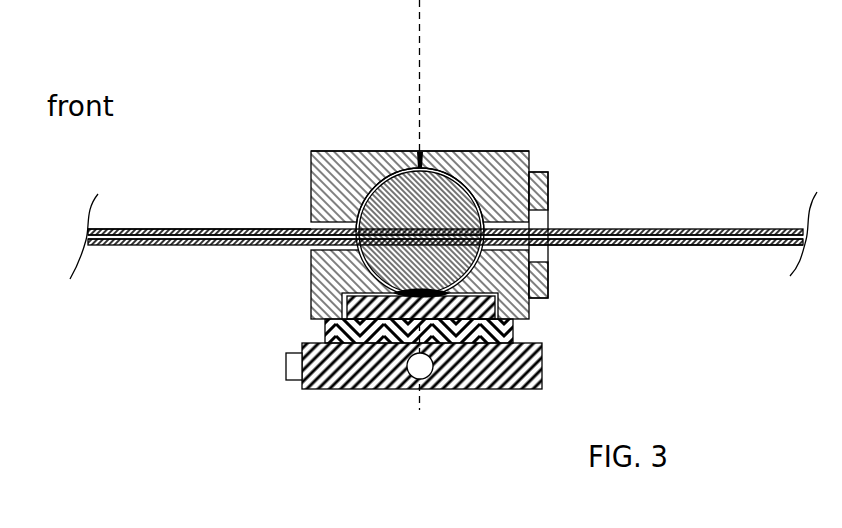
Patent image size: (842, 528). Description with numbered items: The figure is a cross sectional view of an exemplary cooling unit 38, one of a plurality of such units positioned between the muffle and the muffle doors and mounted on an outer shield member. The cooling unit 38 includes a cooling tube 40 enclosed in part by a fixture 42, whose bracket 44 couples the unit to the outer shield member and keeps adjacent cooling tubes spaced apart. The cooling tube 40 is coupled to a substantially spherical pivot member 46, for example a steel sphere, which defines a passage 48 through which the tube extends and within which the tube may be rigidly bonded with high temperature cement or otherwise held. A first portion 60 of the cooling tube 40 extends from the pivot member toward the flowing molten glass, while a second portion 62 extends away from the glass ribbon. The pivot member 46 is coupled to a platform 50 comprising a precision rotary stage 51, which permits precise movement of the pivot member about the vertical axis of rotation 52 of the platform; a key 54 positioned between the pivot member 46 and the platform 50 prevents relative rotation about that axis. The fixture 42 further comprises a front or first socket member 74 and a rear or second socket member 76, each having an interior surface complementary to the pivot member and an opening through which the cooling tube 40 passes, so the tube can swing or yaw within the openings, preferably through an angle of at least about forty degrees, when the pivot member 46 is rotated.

The cooling unit 38 is at (460, 92).
The cooling tube 40 is at (685, 226).
The fixture 42 is at (490, 147).
The bracket 44 is at (544, 172).
The pivot member 46 is at (387, 179).
The passage 48 is at (362, 195).
The platform 50 is at (342, 294).
The precision rotary stage 51 is at (543, 356).
The axis of rotation 52 is at (417, 27).
The key 54 is at (438, 320).
The first portion 60 is at (642, 247).
The second portion 62 is at (227, 228).
The first socket member 74 is at (390, 176).
The second socket member 76 is at (523, 152).